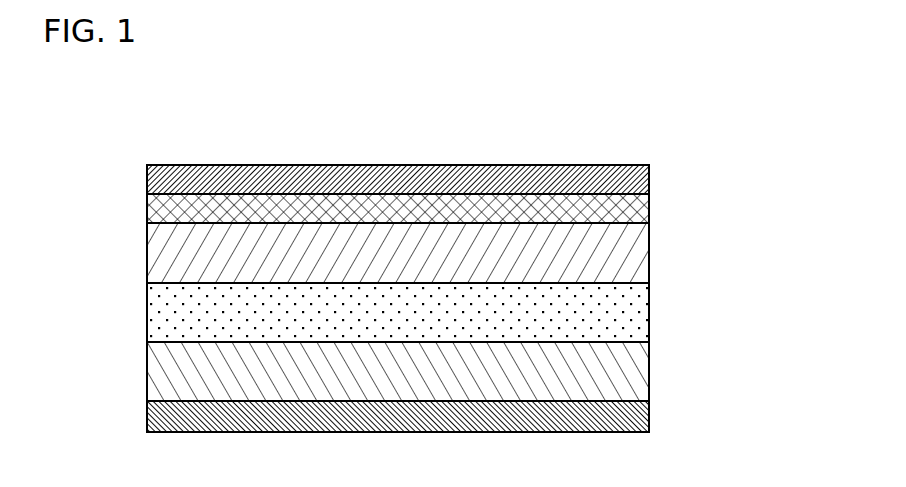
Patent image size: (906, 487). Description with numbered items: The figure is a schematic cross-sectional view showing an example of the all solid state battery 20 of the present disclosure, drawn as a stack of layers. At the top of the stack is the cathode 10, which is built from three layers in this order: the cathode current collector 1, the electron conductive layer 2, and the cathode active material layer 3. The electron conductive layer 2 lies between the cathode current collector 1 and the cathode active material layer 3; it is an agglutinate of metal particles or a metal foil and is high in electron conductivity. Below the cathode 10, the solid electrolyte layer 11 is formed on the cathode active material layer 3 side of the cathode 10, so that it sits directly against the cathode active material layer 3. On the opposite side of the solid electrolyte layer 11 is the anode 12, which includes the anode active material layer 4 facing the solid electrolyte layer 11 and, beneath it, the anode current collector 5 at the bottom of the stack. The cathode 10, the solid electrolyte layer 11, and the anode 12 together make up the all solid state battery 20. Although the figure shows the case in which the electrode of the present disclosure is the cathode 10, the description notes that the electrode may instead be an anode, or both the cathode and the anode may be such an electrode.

The cathode current collector 1 is at (647, 180).
The electron conductive layer 2 is at (640, 215).
The cathode active material layer 3 is at (634, 248).
The anode active material layer 4 is at (635, 355).
The anode current collector 5 is at (635, 415).
The cathode 10 is at (730, 165).
The solid electrolyte layer 11 is at (633, 312).
The anode 12 is at (730, 342).
The all solid state battery 20 is at (617, 137).